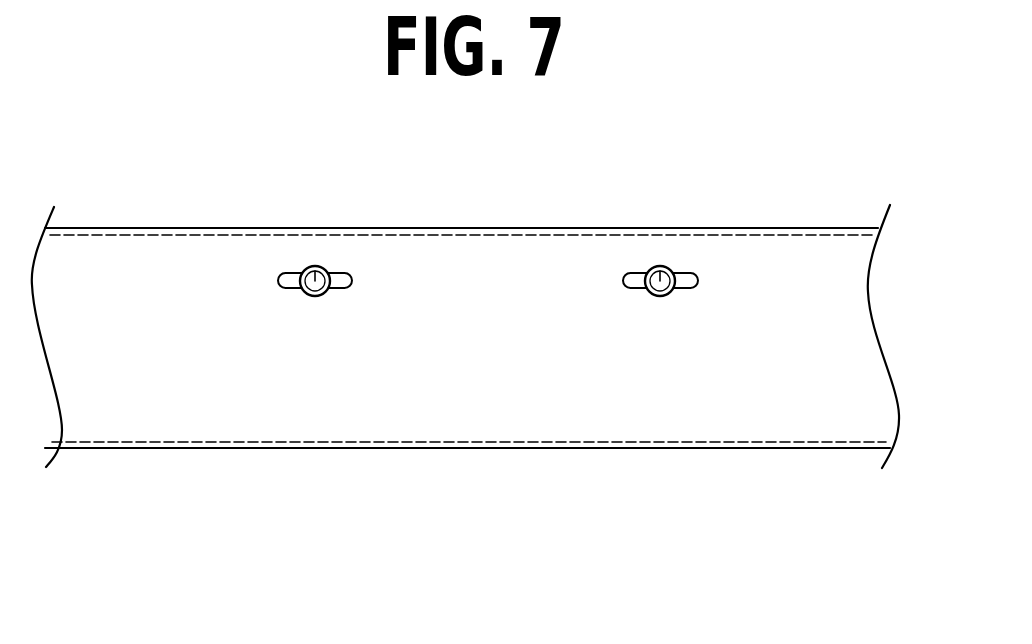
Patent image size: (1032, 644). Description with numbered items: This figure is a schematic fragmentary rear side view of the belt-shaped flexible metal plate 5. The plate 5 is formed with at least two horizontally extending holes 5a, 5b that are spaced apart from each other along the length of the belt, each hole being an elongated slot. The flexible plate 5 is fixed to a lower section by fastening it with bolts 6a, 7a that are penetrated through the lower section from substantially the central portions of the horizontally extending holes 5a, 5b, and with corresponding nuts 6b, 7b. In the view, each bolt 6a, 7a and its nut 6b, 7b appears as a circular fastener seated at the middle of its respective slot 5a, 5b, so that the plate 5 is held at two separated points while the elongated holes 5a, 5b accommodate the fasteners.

The flexible metal plate 5 is at (610, 452).
The horizontally extending hole 5a is at (338, 270).
The horizontally extending hole 5b is at (647, 268).
The bolt 6a is at (252, 221).
The nut 6b is at (685, 216).
The bolt 7a is at (316, 267).
The nut 7b is at (662, 267).